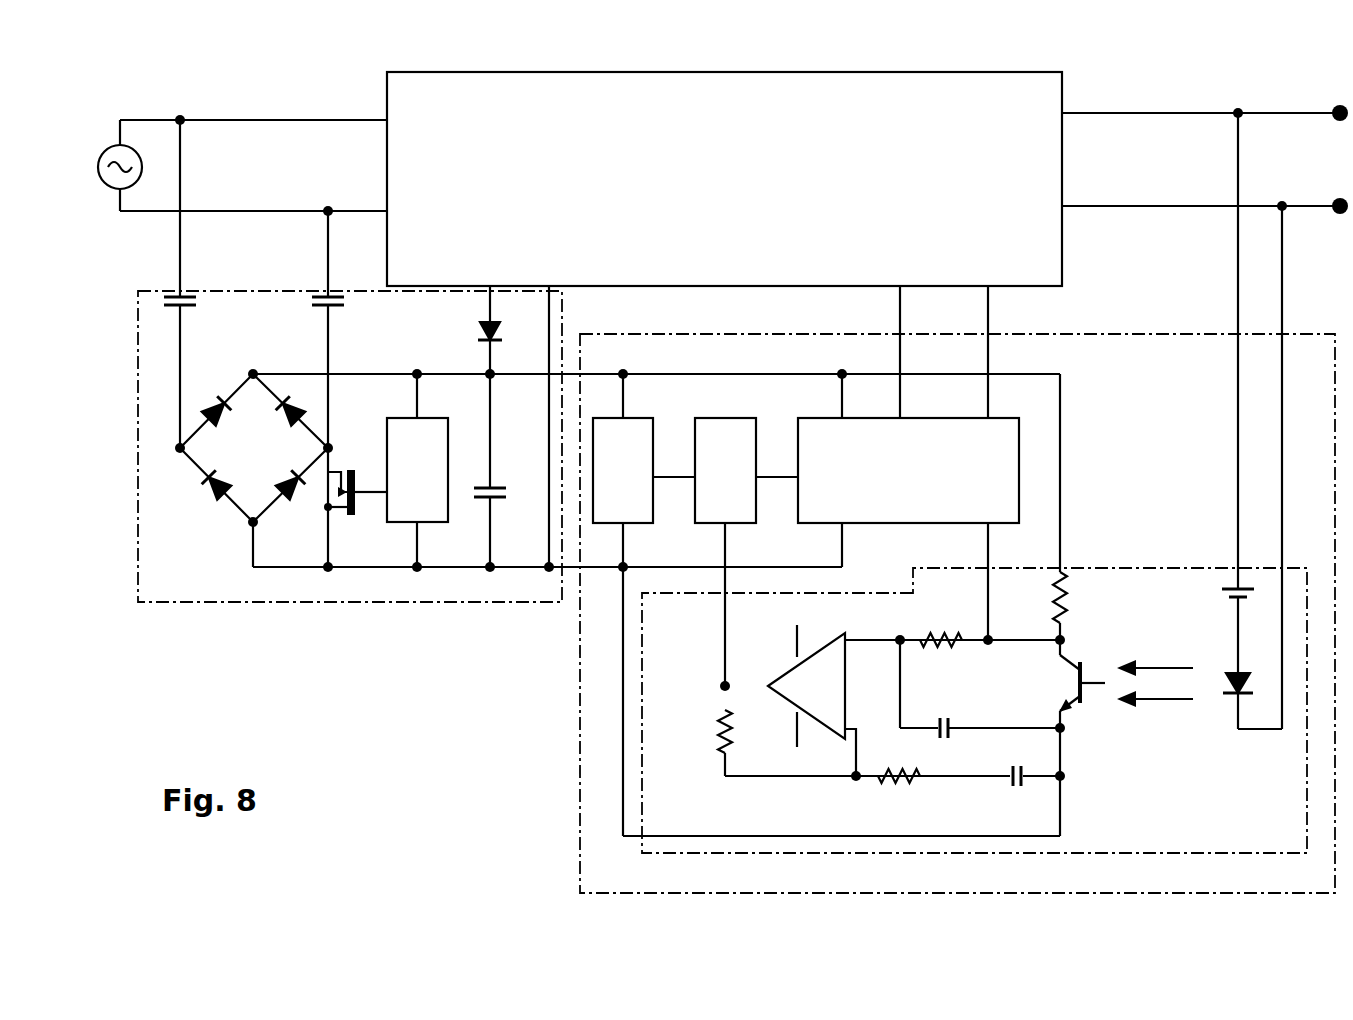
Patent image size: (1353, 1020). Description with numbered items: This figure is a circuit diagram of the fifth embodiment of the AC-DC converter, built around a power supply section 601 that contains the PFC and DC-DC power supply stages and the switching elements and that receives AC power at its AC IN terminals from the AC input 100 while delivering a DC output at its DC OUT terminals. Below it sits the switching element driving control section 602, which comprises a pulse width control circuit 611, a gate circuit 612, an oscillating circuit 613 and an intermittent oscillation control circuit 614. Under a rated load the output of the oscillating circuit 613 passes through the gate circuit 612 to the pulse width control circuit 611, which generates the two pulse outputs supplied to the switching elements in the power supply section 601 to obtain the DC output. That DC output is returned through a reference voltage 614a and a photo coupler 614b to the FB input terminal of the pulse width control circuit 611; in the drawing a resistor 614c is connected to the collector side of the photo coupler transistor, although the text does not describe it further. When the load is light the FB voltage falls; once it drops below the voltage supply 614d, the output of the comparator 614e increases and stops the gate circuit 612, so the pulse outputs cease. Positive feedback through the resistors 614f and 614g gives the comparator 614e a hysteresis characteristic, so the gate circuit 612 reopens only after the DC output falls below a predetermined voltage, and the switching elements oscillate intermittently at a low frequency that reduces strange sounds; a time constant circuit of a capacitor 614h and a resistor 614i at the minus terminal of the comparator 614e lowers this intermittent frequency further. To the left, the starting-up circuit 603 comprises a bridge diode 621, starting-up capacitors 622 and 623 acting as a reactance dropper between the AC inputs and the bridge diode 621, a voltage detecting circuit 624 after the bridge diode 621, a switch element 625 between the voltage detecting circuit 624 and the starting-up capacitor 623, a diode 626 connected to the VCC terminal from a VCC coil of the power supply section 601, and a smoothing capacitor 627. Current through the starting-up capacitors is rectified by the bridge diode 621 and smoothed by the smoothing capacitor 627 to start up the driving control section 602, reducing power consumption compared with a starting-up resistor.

The AC power source 100 is at (120, 137).
The power supply section 601 is at (724, 179).
The driving control section 602 is at (1152, 336).
The starting-up circuit 603 is at (142, 405).
The pulse width control circuit 611 is at (908, 470).
The gate circuit 612 is at (725, 470).
The oscillating circuit 613 is at (623, 470).
The intermittent oscillation control circuit 614 is at (1148, 572).
The reference voltage 614a is at (1217, 607).
The photo coupler 614b is at (1199, 711).
The resistor 614c is at (1087, 597).
The voltage supply 614d is at (1019, 796).
The comparator 614e is at (795, 687).
The resistor 614f is at (899, 798).
The resistor 614g is at (697, 731).
The capacitor 614h is at (944, 715).
The resistor 614i is at (941, 626).
The bridge diode 621 is at (254, 467).
The starting-up capacitor 622 is at (197, 322).
The starting-up capacitor 623 is at (343, 322).
The voltage detecting circuit 624 is at (417, 470).
The switch element 625 is at (357, 515).
The diode 626 is at (465, 336).
The smoothing capacitor 627 is at (506, 521).